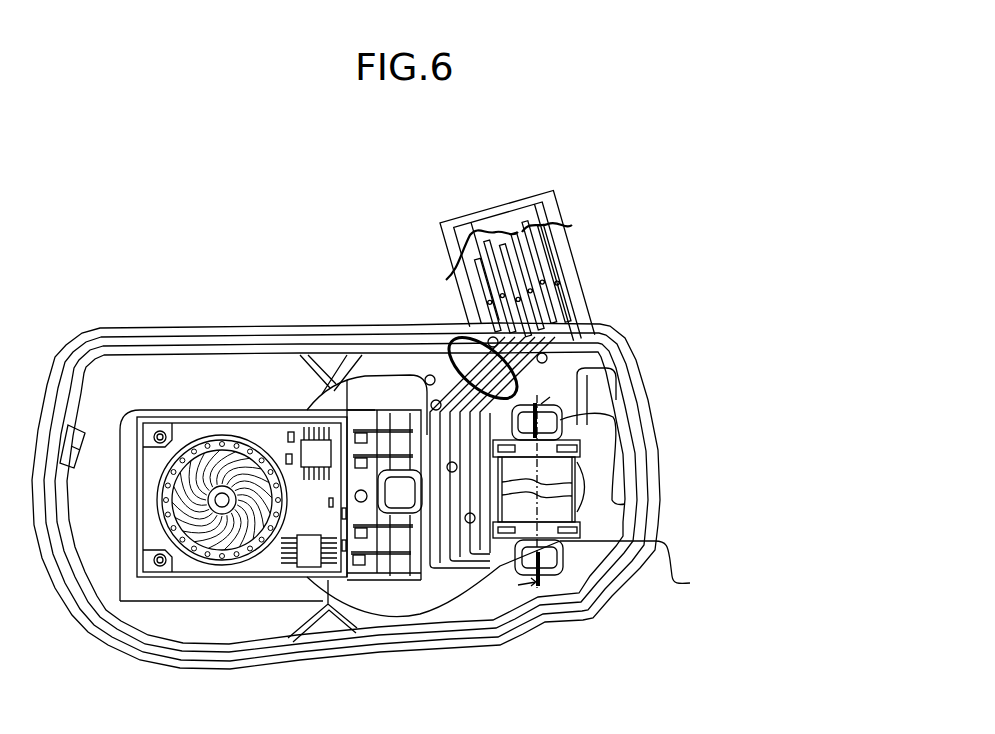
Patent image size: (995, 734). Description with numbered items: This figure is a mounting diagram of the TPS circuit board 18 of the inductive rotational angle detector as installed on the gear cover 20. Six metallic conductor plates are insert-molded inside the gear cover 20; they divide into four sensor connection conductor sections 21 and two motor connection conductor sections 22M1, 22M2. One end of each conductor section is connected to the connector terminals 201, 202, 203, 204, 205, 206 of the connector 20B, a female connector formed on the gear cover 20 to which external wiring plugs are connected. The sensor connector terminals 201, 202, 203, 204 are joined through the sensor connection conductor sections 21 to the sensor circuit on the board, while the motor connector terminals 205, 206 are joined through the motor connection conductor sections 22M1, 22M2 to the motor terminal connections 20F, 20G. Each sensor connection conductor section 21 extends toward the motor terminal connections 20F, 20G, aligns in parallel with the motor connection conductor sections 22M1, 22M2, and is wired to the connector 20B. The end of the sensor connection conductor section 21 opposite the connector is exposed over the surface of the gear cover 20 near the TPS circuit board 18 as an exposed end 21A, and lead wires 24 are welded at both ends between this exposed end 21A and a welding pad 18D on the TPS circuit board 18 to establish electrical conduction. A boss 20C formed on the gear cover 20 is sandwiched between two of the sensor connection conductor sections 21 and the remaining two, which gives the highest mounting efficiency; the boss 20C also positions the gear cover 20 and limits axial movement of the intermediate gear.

The TPS circuit board 18 is at (253, 430).
The welding pad 18D is at (352, 565).
The gear cover 20 is at (152, 387).
The connector 20B is at (583, 275).
The boss 20C is at (418, 512).
The motor terminal connection 20F is at (690, 583).
The motor terminal connection 20G is at (620, 504).
The sensor connection conductor section 21 is at (445, 339).
The exposed end 21A is at (413, 505).
The motor connection conductor section 22M1 is at (560, 392).
The motor connection conductor section 22M2 is at (520, 416).
The lead wires 24 is at (397, 512).
The sensor connector terminal 201 is at (472, 222).
The sensor connector terminal 202 is at (500, 286).
The sensor connector terminal 203 is at (516, 290).
The sensor connector terminal 204 is at (527, 281).
The motor connector terminal 205 is at (522, 222).
The motor connector terminal 206 is at (554, 274).